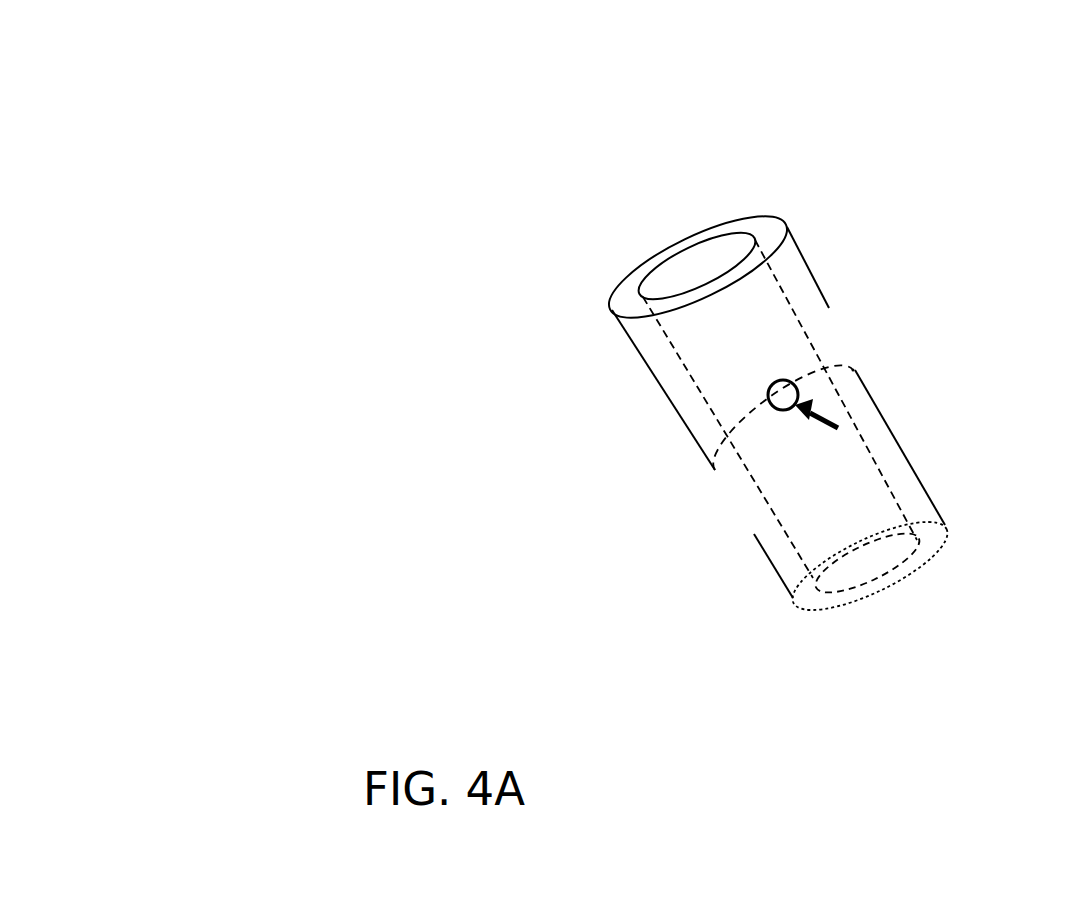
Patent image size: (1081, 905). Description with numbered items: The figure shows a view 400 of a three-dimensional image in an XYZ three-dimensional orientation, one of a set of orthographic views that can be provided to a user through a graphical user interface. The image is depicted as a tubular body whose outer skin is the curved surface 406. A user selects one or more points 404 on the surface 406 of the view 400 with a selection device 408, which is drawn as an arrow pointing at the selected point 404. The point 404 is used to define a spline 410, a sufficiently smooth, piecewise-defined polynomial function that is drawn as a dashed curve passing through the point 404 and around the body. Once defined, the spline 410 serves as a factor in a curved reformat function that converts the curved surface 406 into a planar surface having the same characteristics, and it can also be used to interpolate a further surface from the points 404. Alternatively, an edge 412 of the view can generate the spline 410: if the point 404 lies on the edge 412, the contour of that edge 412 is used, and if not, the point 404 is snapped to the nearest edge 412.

The view 400 is at (276, 83).
The point 404 is at (770, 402).
The surface 406 is at (731, 367).
The selection device 408 is at (840, 427).
The spline 410 is at (832, 372).
The edge 412 is at (678, 420).